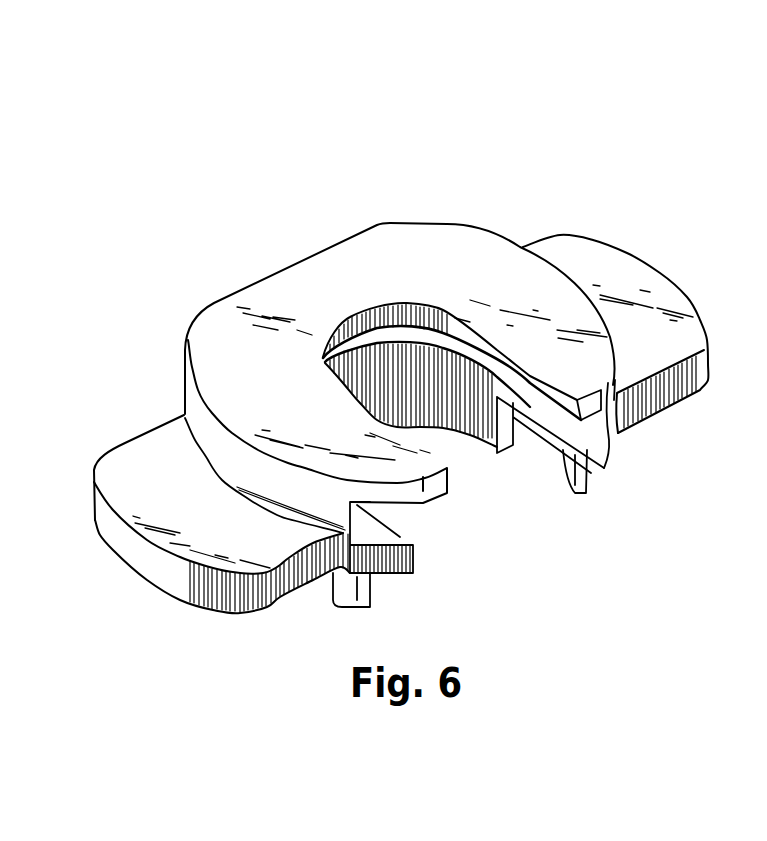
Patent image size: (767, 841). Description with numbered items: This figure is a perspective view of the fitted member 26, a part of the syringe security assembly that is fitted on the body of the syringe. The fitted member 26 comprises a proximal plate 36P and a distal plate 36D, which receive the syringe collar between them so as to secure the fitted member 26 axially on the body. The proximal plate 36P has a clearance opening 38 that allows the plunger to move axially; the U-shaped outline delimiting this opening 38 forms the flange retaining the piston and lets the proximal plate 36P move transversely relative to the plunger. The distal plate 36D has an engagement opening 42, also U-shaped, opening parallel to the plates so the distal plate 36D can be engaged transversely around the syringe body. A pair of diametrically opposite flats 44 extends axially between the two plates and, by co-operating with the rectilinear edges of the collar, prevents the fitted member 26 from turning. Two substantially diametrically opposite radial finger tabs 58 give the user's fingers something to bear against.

The fitted member 26 is at (624, 230).
The proximal plate 36P is at (432, 243).
The distal plate 36D is at (385, 540).
The opening 38 is at (483, 341).
The opening 42 is at (597, 470).
The flats 44 is at (300, 514).
The radial finger tabs 58 is at (120, 461).